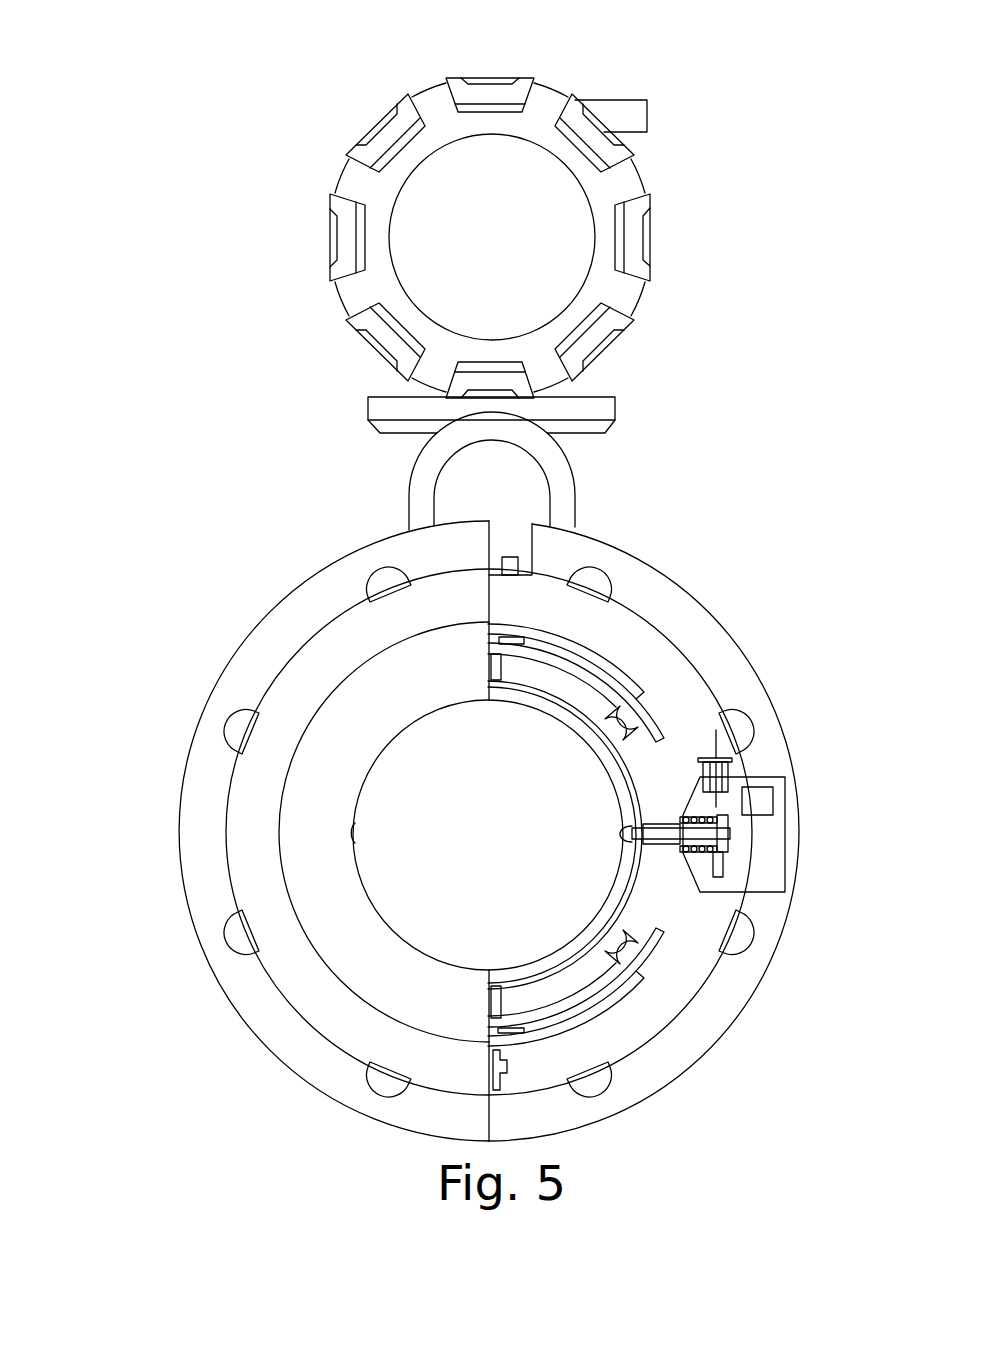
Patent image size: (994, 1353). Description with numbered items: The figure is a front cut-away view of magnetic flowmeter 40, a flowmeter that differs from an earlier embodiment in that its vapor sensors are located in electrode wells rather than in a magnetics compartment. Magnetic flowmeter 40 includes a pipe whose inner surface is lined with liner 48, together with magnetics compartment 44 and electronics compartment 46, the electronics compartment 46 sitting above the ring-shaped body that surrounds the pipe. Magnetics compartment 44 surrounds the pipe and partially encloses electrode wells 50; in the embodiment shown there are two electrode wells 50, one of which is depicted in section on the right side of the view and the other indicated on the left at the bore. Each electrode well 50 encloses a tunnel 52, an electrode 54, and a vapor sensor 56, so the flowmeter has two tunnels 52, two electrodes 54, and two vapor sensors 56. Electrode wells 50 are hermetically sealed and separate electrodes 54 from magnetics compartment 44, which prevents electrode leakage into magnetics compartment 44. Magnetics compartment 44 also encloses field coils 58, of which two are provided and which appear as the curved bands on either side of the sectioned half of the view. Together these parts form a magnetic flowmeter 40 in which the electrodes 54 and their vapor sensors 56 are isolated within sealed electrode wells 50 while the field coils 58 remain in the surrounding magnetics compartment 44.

The magnetic flowmeter 40 is at (520, 642).
The magnetics compartment 44 is at (587, 643).
The electronics compartment 46 is at (553, 87).
The liner 48 is at (560, 713).
The electrode well 50 is at (786, 792).
The tunnel 52 is at (658, 845).
The electrode 54 is at (625, 826).
The vapor sensor 56 is at (757, 805).
The field coil 58 is at (617, 720).